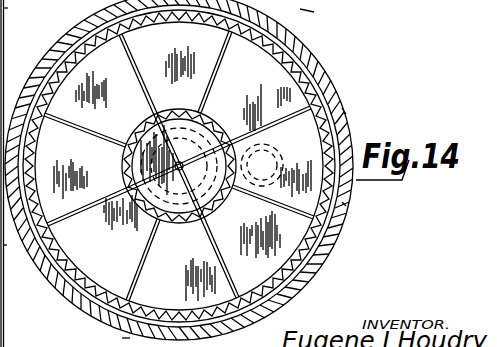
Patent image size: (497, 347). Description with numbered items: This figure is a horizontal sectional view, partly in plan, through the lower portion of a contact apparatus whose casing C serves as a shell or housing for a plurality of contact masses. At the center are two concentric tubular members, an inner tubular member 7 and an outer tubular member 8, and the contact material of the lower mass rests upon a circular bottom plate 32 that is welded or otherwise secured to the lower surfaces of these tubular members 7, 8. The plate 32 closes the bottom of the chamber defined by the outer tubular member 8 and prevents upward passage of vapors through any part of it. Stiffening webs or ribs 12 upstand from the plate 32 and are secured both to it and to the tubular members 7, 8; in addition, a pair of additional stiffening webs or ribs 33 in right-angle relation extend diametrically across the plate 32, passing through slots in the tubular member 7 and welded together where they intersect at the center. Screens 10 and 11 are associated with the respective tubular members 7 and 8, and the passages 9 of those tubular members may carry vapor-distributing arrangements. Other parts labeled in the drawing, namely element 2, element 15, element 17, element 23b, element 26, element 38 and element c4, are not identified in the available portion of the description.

The central shaft 2 is at (191, 112).
The inner tubular member 7 is at (148, 128).
The outer tubular member 8 is at (306, 70).
The passages 9 is at (181, 113).
The screen 10 is at (128, 153).
The screen 11 is at (93, 44).
The stiffening webs or ribs 12 is at (141, 105).
The side wall 15 is at (3, 29).
The wall member 17 is at (4, 245).
The rim section 23b is at (326, 14).
The conduit opening 26 is at (282, 141).
The circular bottom plate 32 is at (130, 338).
The additional stiffening webs or ribs 33 is at (208, 128).
The wall fitting 38 is at (8, 8).
The casing C is at (345, 102).
The casing section c4 is at (343, 203).